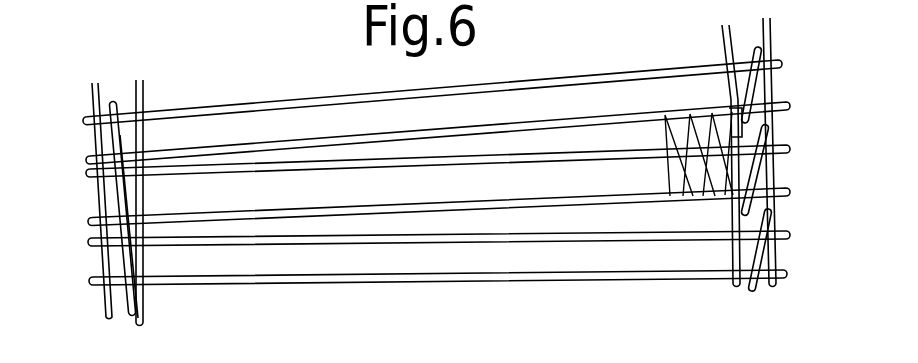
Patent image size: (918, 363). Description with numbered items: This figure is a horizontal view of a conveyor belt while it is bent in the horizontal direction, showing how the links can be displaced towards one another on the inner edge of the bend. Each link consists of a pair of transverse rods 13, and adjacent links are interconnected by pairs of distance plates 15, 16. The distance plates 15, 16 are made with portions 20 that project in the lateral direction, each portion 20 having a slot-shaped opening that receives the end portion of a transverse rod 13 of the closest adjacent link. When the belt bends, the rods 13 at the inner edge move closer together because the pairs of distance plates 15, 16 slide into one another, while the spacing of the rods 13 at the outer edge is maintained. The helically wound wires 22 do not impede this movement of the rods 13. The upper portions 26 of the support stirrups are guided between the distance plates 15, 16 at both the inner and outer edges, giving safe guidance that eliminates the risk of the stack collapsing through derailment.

The transverse rod 13 is at (214, 178).
The distance plate 15 is at (779, 257).
The distance plate 16 is at (738, 258).
The laterally projecting portion 20 is at (781, 211).
The helically wound wire 22 is at (664, 130).
The upper portion of support stirrup 26 is at (769, 82).